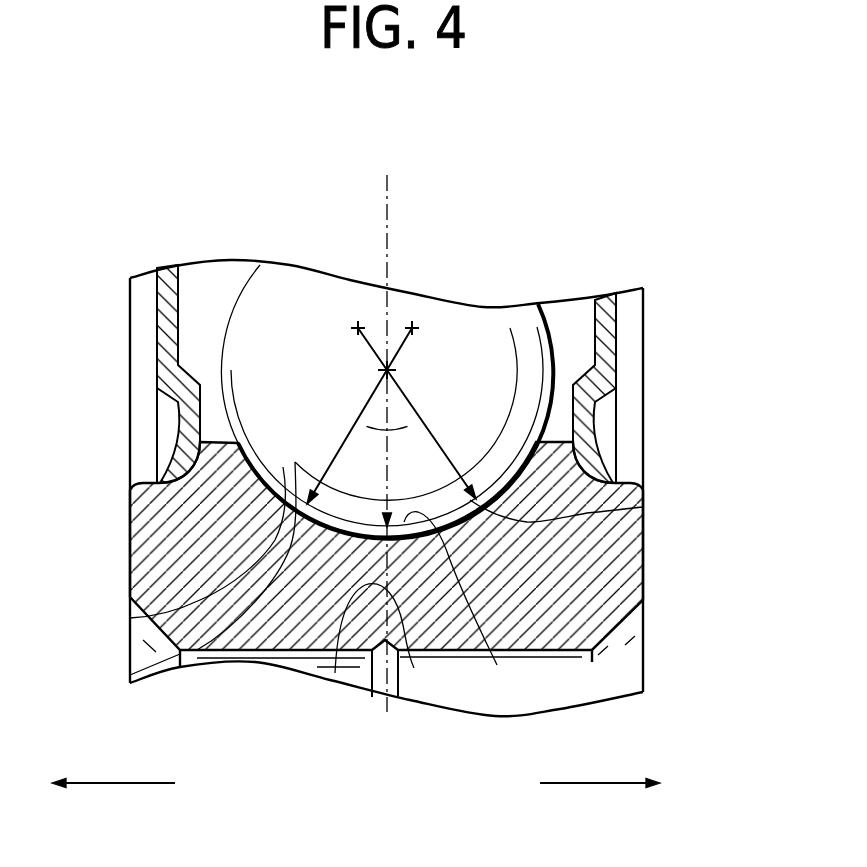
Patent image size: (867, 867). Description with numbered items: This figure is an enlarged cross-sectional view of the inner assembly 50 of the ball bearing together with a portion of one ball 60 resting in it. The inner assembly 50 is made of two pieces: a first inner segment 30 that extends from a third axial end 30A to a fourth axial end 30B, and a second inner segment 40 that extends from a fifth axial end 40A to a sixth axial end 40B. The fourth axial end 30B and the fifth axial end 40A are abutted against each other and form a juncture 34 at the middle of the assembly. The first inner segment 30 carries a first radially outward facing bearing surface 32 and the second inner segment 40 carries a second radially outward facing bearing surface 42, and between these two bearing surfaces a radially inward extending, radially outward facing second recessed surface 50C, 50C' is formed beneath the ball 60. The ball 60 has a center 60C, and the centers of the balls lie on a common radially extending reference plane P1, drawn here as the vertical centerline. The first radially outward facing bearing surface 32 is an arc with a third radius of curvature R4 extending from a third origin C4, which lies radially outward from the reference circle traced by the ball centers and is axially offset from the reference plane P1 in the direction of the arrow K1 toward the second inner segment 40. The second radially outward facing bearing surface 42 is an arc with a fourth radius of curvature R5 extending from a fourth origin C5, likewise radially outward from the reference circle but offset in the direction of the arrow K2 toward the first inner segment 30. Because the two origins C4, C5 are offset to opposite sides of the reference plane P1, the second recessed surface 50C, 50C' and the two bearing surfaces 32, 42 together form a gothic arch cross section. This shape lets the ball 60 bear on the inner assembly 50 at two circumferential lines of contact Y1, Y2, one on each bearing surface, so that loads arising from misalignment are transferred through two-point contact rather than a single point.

The first inner segment 30 is at (190, 578).
The third axial end 30A is at (130, 547).
The fourth axial end 30B is at (397, 638).
The first radially outward facing bearing surface 32 is at (283, 467).
The juncture 34 is at (390, 528).
The second inner segment 40 is at (570, 598).
The fifth axial end 40A is at (336, 672).
The sixth axial end 40B is at (645, 575).
The second radially outward facing bearing surface 42 is at (600, 427).
The inner assembly 50 is at (642, 730).
The second recessed surface 50C is at (114, 665).
The second recessed surface 50C' is at (477, 602).
The ball 60 is at (517, 333).
The center of the ball 60C is at (413, 408).
The third origin C4 is at (418, 323).
The fourth origin C5 is at (357, 323).
The third radius of curvature R4 is at (353, 411).
The fourth radius of curvature R5 is at (487, 318).
The reference plane P1 is at (389, 187).
The circumferential line of contact Y1 is at (130, 618).
The circumferential line of contact Y2 is at (643, 507).
The arrow K1 is at (572, 784).
The arrow K2 is at (133, 784).